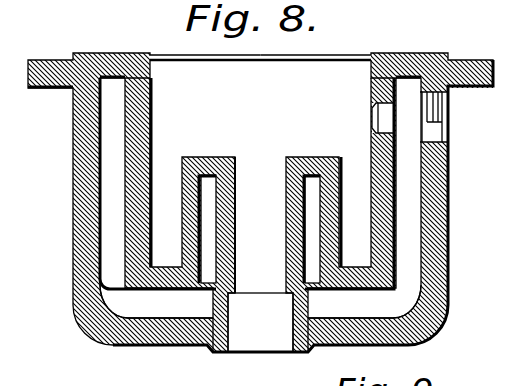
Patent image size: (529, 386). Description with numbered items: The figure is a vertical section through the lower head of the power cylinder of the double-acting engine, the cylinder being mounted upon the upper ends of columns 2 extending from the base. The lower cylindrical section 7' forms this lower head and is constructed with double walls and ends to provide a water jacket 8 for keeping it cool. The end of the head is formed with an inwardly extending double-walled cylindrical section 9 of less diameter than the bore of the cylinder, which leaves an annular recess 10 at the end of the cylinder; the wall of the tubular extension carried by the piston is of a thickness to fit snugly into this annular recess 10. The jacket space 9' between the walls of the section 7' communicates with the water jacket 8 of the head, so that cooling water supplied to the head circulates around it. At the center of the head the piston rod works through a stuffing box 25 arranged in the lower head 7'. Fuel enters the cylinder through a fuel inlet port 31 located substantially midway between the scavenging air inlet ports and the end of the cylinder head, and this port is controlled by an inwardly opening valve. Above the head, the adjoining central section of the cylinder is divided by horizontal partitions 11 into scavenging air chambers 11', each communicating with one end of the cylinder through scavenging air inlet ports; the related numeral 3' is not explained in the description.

The lower cylindrical section 7' is at (260, 202).
The water jacket 8 is at (110, 288).
The inwardly extending double-walled cylindrical section 9 is at (259, 229).
The jacket space 9' is at (260, 324).
The annular recess 10 is at (162, 170).
The horizontal partition 11 is at (258, 17).
The scavenging air chamber 11' is at (397, 12).
The stuffing box 25 is at (260, 322).
The fuel inlet port 31 is at (370, 118).
The fragment of adjacent figure numeral 3' is at (7, 6).
The column 2 is at (344, 5).